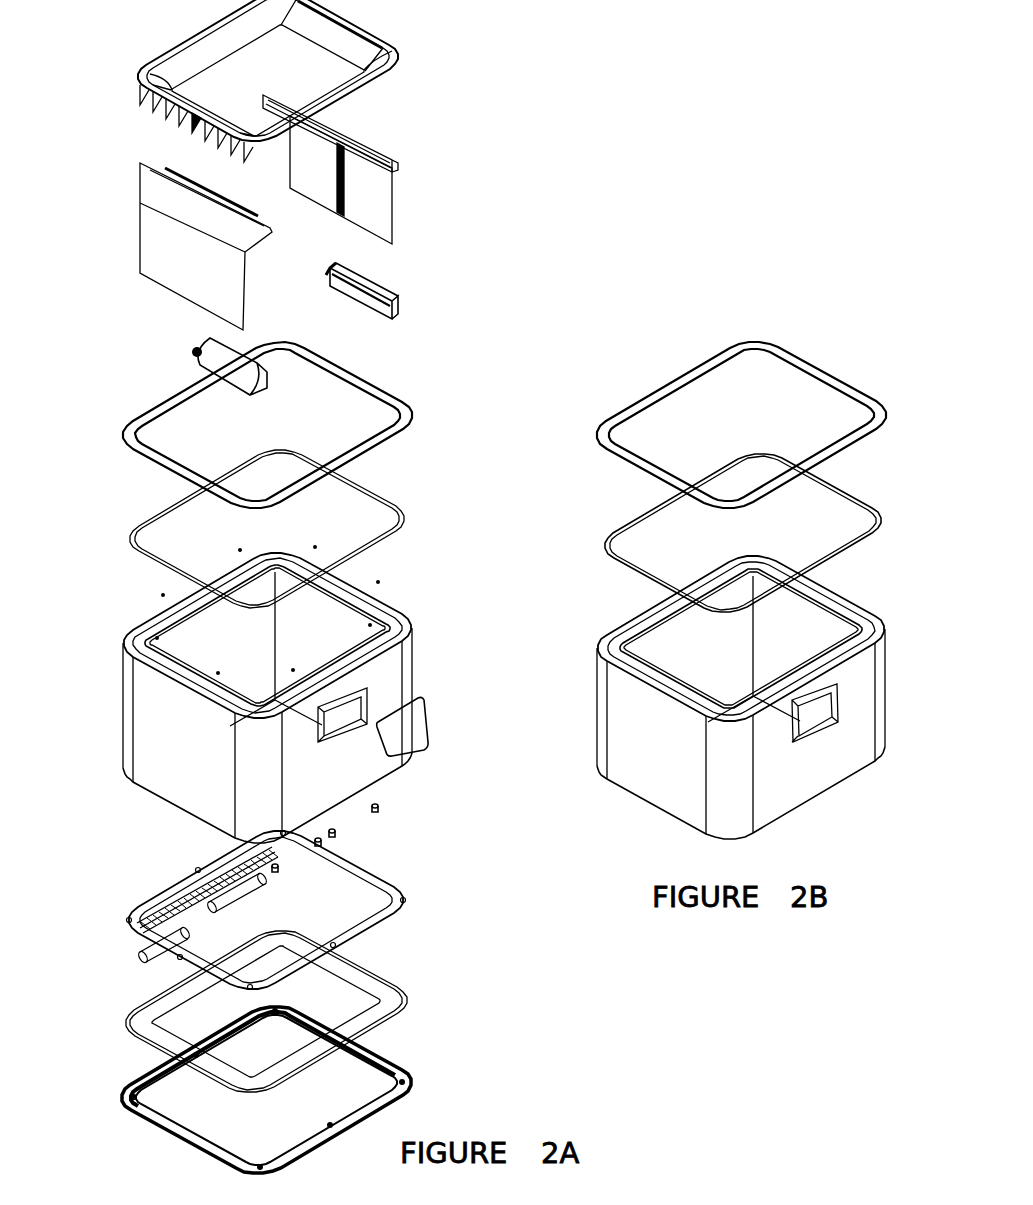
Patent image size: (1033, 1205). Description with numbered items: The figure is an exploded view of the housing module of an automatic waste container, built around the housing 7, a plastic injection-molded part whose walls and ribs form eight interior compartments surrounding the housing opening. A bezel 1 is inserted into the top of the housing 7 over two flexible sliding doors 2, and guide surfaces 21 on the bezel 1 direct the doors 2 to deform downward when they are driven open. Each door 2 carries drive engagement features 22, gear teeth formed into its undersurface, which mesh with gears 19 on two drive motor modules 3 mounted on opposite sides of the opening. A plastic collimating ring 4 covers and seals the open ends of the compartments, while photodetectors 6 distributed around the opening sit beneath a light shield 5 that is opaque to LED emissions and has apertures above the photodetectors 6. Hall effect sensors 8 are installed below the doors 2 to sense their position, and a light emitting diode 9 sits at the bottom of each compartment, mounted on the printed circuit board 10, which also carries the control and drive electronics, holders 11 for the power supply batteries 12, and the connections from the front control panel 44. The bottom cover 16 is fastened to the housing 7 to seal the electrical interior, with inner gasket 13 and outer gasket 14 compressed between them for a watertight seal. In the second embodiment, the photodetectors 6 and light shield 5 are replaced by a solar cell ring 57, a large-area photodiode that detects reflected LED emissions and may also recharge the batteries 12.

In FIG. 2A, the bezel 1 is at (350, 38).
In FIG. 2A, the guide surfaces 21 is at (175, 112).
In FIG. 2A, the sliding doors 2 is at (148, 231).
In FIG. 2A, the drive engagement features 22 is at (335, 193).
In FIG. 2A, the drive motor modules 3 is at (377, 288).
In FIG. 2A, the gears 19 is at (326, 278).
In FIG. 2A, the collimating ring 4 is at (124, 430).
In FIG. 2B, the collimating ring 4 is at (845, 388).
In FIG. 2A, the light shield 5 is at (131, 539).
In FIG. 2A, the photodetectors 6 is at (370, 625).
In FIG. 2A, the housing 7 is at (137, 694).
In FIG. 2B, the housing 7 is at (835, 613).
In FIG. 2A, the front control panel 44 is at (415, 718).
In FIG. 2A, the hall effect sensors 8 is at (278, 868).
In FIG. 2A, the light emitting diodes 9 is at (196, 869).
In FIG. 2A, the printed circuit board 10 is at (375, 922).
In FIG. 2A, the holders 11 is at (235, 870).
In FIG. 2A, the power supply batteries 12 is at (112, 967).
In FIG. 2A, the inner gasket 13 is at (128, 1025).
In FIG. 2A, the outer gasket 14 is at (153, 1046).
In FIG. 2A, the bottom cover 16 is at (160, 1127).
In FIG. 2B, the solar cell ring 57 is at (857, 505).